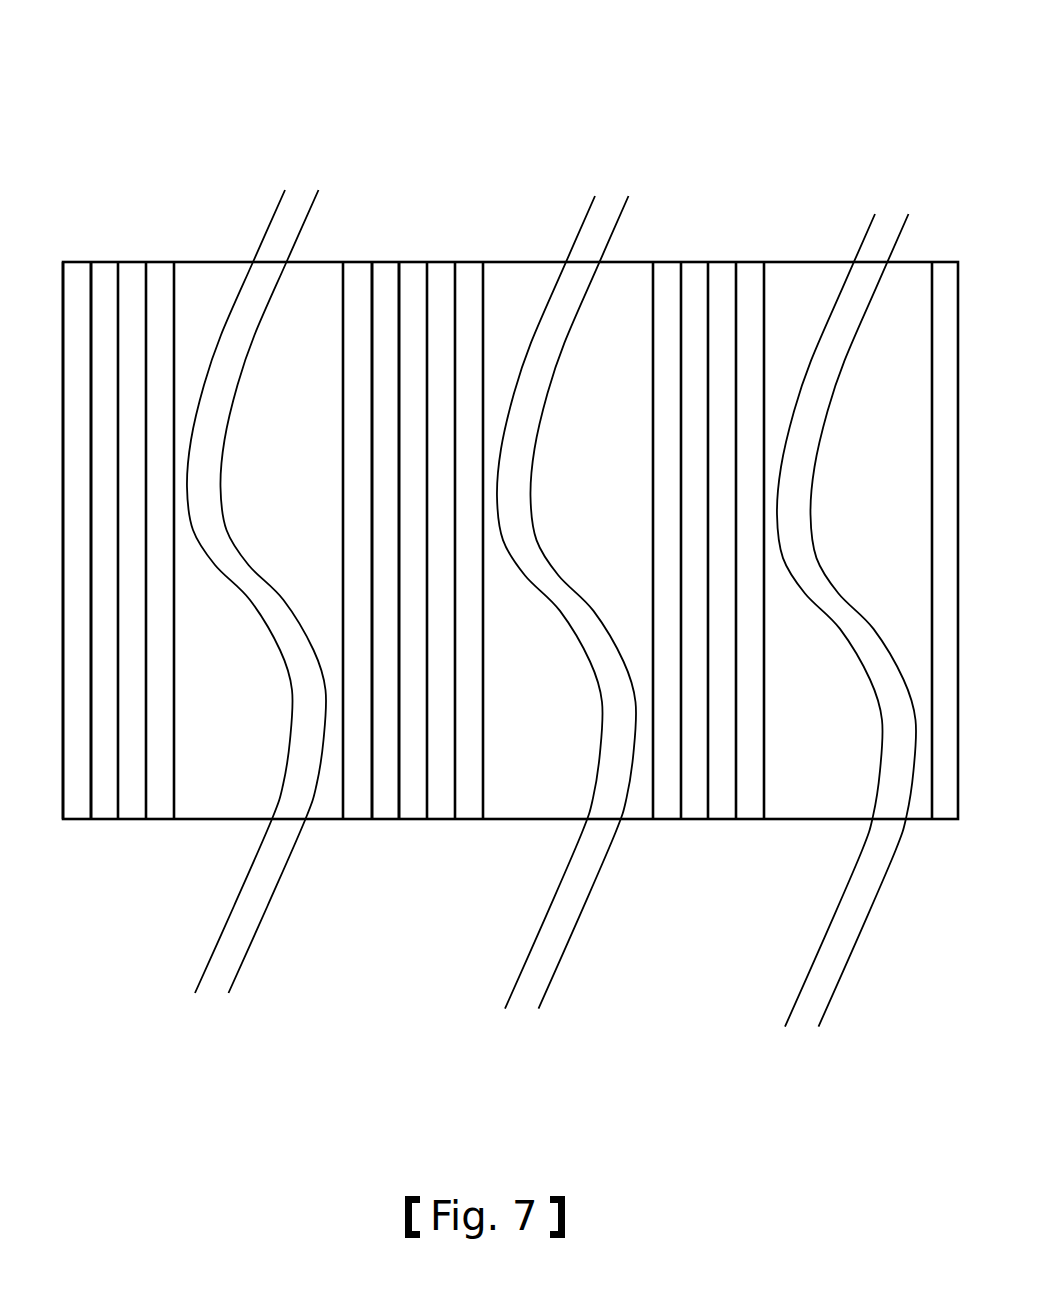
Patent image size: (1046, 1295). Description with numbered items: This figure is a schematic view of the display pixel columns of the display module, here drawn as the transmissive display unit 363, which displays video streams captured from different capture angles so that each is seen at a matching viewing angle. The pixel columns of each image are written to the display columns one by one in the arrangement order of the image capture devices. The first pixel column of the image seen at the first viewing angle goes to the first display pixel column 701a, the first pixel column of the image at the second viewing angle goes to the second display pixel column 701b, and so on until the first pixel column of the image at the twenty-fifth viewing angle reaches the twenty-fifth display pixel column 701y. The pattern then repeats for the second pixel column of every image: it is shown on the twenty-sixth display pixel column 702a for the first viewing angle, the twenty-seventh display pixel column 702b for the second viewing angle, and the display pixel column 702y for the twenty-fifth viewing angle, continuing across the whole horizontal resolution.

The transmissive display unit 363 is at (427, 130).
The first display pixel column 701a is at (77, 831).
The second display pixel column 701b is at (105, 832).
The 25th display pixel column 701y is at (357, 831).
The 26th display pixel column 702a is at (386, 832).
The 27th display pixel column 702b is at (418, 832).
The display pixel column for the 25th viewing angle 702y is at (665, 831).